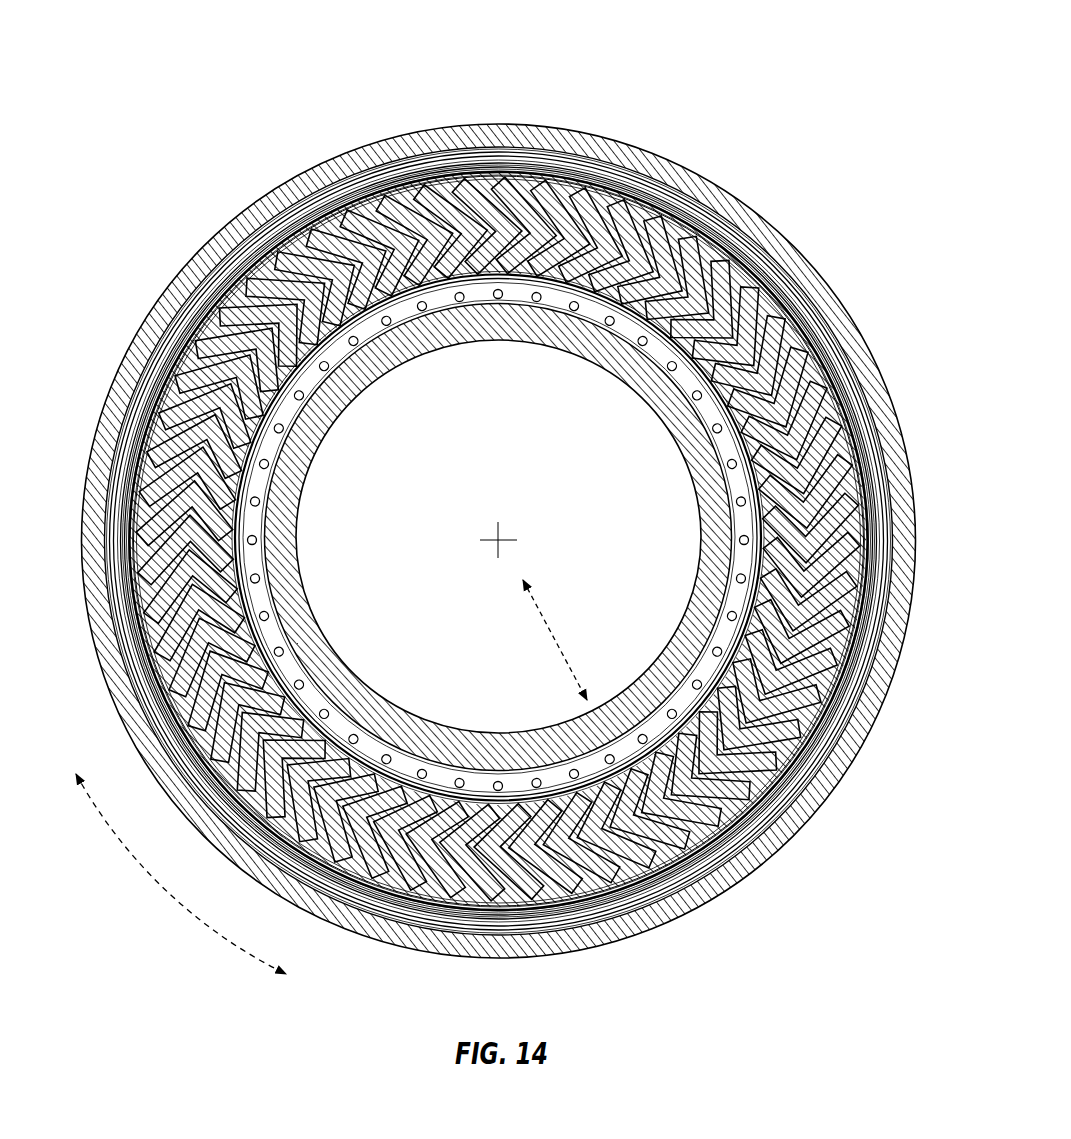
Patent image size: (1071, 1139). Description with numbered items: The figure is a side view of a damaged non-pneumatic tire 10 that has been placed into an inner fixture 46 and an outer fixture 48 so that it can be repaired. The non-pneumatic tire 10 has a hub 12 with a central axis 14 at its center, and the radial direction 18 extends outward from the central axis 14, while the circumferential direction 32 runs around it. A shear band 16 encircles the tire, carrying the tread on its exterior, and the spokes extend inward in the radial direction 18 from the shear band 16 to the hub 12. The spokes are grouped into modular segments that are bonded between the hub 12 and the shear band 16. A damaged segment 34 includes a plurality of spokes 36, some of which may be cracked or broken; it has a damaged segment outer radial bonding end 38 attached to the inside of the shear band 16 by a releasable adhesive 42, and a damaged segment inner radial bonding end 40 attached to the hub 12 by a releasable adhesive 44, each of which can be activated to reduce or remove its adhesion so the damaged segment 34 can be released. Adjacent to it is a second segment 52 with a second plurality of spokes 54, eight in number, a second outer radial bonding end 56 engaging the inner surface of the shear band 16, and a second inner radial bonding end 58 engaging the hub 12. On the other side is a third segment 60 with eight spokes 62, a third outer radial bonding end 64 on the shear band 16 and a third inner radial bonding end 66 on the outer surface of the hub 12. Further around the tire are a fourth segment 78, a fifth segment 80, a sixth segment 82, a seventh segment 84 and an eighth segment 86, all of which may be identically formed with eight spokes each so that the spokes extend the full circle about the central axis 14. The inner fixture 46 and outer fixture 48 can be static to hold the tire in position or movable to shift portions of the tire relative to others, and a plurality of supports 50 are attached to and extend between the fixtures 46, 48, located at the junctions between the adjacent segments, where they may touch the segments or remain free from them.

The non-pneumatic tire 10 is at (130, 65).
The hub 12 is at (270, 565).
The central axis 14 is at (507, 538).
The shear band 16 is at (132, 422).
The radial direction 18 is at (553, 643).
The circumferential direction 32 is at (130, 857).
The damaged segment 34 is at (650, 220).
The spokes of damaged segment 36 is at (608, 200).
The damaged segment outer radial bonding end 38 is at (537, 173).
The damaged segment inner radial bonding end 40 is at (597, 327).
The releasable adhesive 42 is at (713, 230).
The releasable adhesive 44 is at (647, 333).
The inner fixture 46 is at (658, 673).
The outer fixture 48 is at (693, 900).
The supports 50 is at (547, 207).
The second segment 52 is at (403, 190).
The second plurality of spokes 54 is at (347, 187).
The second outer radial bonding end 56 is at (253, 217).
The second inner radial bonding end 58 is at (357, 327).
The third segment 60 is at (813, 347).
The spokes of third segment 62 is at (865, 507).
The third outer radial bonding end 64 is at (787, 302).
The third inner radial bonding end 66 is at (733, 445).
The fourth segment 78 is at (162, 382).
The fifth segment 80 is at (153, 647).
The sixth segment 82 is at (307, 868).
The seventh segment 84 is at (613, 890).
The eighth segment 86 is at (836, 696).